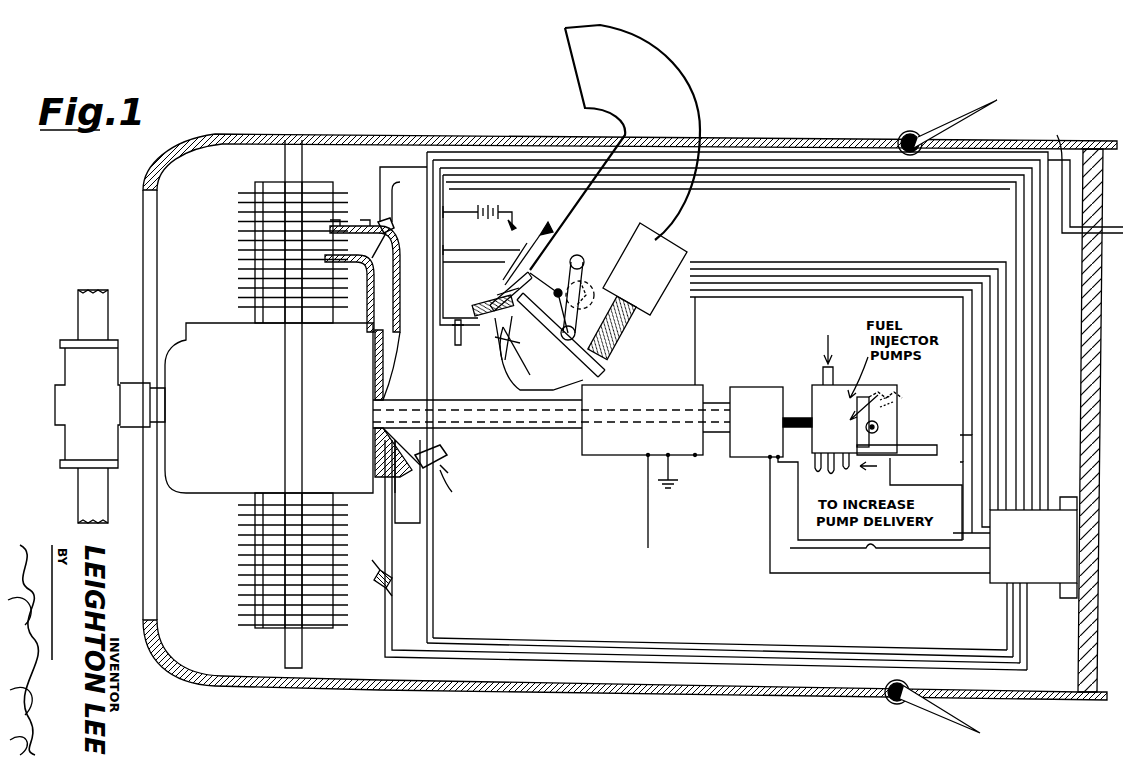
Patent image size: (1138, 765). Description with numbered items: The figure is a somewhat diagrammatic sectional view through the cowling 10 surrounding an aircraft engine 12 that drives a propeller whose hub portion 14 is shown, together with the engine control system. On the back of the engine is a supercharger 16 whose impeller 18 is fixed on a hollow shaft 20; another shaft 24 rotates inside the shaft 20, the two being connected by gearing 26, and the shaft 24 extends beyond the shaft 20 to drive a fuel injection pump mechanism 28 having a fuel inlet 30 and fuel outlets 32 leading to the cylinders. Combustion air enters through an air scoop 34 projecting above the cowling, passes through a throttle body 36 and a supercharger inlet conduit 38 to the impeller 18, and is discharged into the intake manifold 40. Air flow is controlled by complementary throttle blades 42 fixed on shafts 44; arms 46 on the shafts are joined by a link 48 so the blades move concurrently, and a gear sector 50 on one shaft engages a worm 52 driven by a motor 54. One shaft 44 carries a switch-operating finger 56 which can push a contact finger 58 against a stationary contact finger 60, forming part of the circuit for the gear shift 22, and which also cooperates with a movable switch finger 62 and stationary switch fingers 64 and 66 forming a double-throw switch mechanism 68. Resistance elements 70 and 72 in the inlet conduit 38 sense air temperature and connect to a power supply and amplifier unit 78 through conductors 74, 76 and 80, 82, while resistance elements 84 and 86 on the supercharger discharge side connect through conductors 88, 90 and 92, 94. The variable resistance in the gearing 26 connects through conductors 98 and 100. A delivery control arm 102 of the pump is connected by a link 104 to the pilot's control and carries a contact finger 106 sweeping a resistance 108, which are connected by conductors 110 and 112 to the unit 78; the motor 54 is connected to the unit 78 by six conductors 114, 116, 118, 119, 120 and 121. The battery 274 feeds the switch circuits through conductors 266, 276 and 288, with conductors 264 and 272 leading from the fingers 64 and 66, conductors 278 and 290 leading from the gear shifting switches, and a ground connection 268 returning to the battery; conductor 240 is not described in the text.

The cowling 10 is at (372, 134).
The aircraft engine 12 is at (216, 248).
The propeller hub portion 14 is at (48, 380).
The supercharger 16 is at (395, 550).
The impeller 18 is at (410, 382).
The shaft 20 is at (548, 432).
The gear shift 22 is at (664, 386).
The shaft 24 is at (533, 436).
The gearing 26 is at (766, 390).
The fuel injection pump mechanism 28 is at (854, 410).
The fuel inlet 30 is at (832, 366).
The fuel outlets 32 is at (848, 477).
The air scoop 34 is at (572, 68).
The throttle body 36 is at (600, 362).
The supercharger inlet conduit 38 is at (450, 458).
The intake manifold 40 is at (380, 222).
The throttle blades 42 is at (587, 282).
The shafts 44 is at (605, 270).
The arms 46 is at (578, 255).
The link 48 is at (557, 298).
The gear sector 50 is at (620, 332).
The worm 52 is at (615, 340).
The motor 54 is at (645, 269).
The switch-operating finger 56 is at (512, 310).
The contact finger 58 is at (529, 252).
The stationary contact finger 60 is at (505, 276).
The movable switch finger 62 is at (541, 358).
The stationary switch finger 64 is at (505, 300).
The stationary switch finger 66 is at (507, 338).
The double-throw switch mechanism 68 is at (465, 306).
The electrical resistance element 70 is at (461, 345).
The electrical resistance element 72 is at (454, 485).
The conductor 74 is at (752, 192).
The conductor 76 is at (792, 192).
The power supply and amplifier unit 78 is at (1033, 583).
The conductor 80 is at (433, 552).
The conductor 82 is at (427, 578).
The temperature responsive resistance element 84 is at (394, 231).
The temperature responsive resistance element 86 is at (393, 578).
The conductor 88 is at (412, 168).
The conductor 90 is at (404, 202).
The conductor 92 is at (392, 605).
The conductor 94 is at (385, 630).
The conductor 98 is at (872, 550).
The conductor 100 is at (920, 548).
The delivery control arm 102 is at (880, 428).
The link 104 is at (924, 455).
The contact finger 106 is at (866, 395).
The resistance 108 is at (895, 399).
The conductor 110 is at (956, 479).
The conductor 112 is at (955, 496).
The conductor 114 is at (770, 246).
The conductor 116 is at (808, 246).
The conductor 118 is at (840, 276).
The conductor 119 is at (872, 283).
The conductor 120 is at (914, 290).
The conductor 121 is at (954, 297).
The conductor 240 is at (790, 560).
The conductor 264 is at (1075, 242).
The conductor 266 is at (475, 255).
The ground connection 268 is at (520, 226).
The conductor 272 is at (1060, 140).
The battery 274 is at (516, 226).
The conductor 276 is at (477, 207).
The conductor 278 is at (648, 540).
The conductor 288 is at (481, 243).
The conductor 290 is at (695, 325).